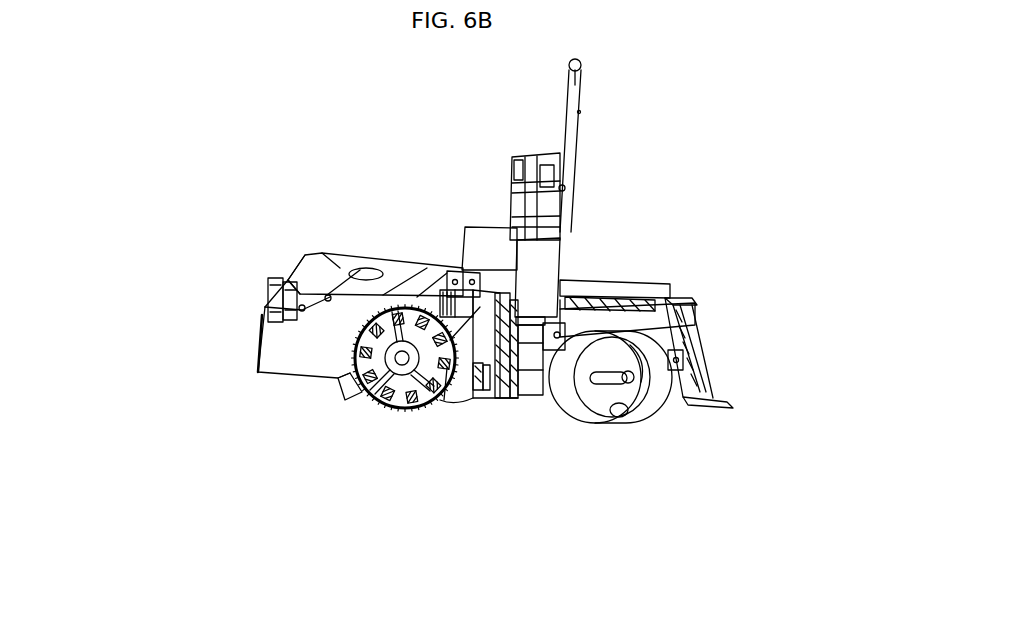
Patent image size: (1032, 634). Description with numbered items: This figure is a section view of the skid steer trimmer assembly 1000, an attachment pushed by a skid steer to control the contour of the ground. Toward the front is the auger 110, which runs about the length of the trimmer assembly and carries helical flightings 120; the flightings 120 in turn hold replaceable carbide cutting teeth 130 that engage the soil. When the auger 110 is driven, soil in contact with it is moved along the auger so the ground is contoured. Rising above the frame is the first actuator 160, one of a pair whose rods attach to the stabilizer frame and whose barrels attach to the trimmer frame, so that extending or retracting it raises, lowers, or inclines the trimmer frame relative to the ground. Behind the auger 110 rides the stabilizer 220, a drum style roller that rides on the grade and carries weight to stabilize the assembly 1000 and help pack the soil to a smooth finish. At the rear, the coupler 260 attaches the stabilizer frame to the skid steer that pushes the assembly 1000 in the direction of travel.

The skid steer trimmer assembly 1000 is at (168, 209).
The auger 110 is at (373, 410).
The flightings 120 is at (410, 410).
The carbide cutting teeth 130 is at (363, 375).
The first actuator 160 is at (504, 207).
The stabilizer 220 is at (656, 396).
The coupler 260 is at (703, 360).